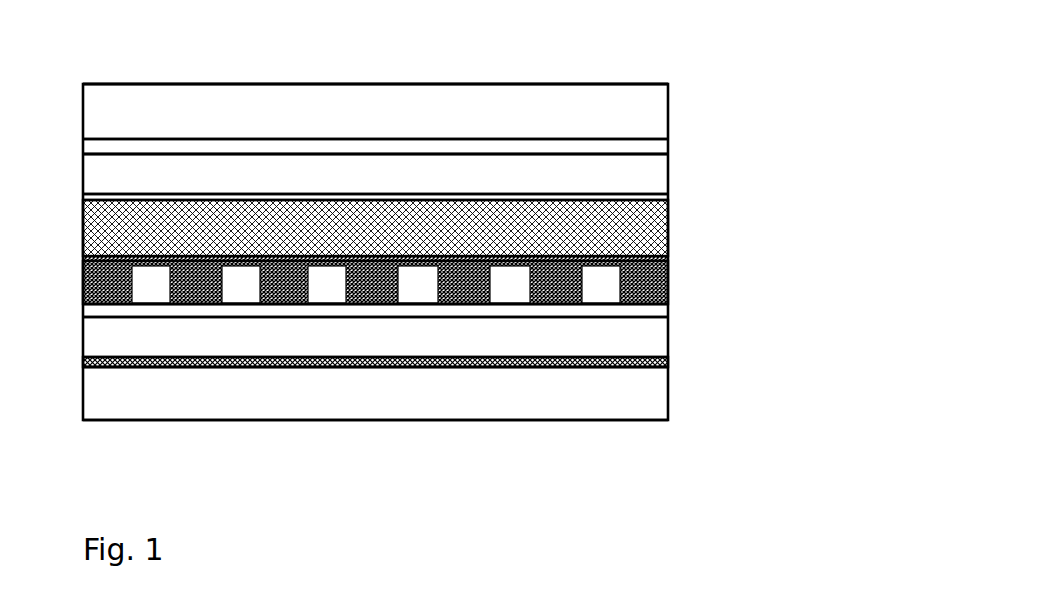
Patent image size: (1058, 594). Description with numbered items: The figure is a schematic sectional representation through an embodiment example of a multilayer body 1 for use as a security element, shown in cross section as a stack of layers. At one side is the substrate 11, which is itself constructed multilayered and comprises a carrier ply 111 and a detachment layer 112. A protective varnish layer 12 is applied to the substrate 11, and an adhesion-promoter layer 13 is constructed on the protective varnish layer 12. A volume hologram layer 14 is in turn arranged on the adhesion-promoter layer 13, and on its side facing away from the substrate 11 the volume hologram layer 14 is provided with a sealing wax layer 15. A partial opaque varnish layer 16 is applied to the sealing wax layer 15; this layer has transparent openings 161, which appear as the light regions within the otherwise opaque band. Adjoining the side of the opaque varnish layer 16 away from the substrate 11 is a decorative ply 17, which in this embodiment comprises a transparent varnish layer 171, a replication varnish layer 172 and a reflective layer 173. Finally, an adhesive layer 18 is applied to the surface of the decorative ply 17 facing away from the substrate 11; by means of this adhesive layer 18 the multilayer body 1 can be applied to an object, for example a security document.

The multilayer body 1 is at (782, 55).
The substrate 11 is at (686, 86).
The carrier ply 111 is at (84, 112).
The detachment layer 112 is at (84, 152).
The protective varnish layer 12 is at (668, 174).
The adhesion-promoter layer 13 is at (668, 198).
The volume hologram layer 14 is at (668, 229).
The sealing wax layer 15 is at (668, 258).
The partial opaque varnish layer 16 is at (668, 282).
The transparent openings 161 is at (160, 294).
The decorative ply 17 is at (680, 304).
The transparent varnish layer 171 is at (84, 316).
The replication varnish layer 172 is at (84, 346).
The reflective layer 173 is at (84, 361).
The adhesive layer 18 is at (668, 393).